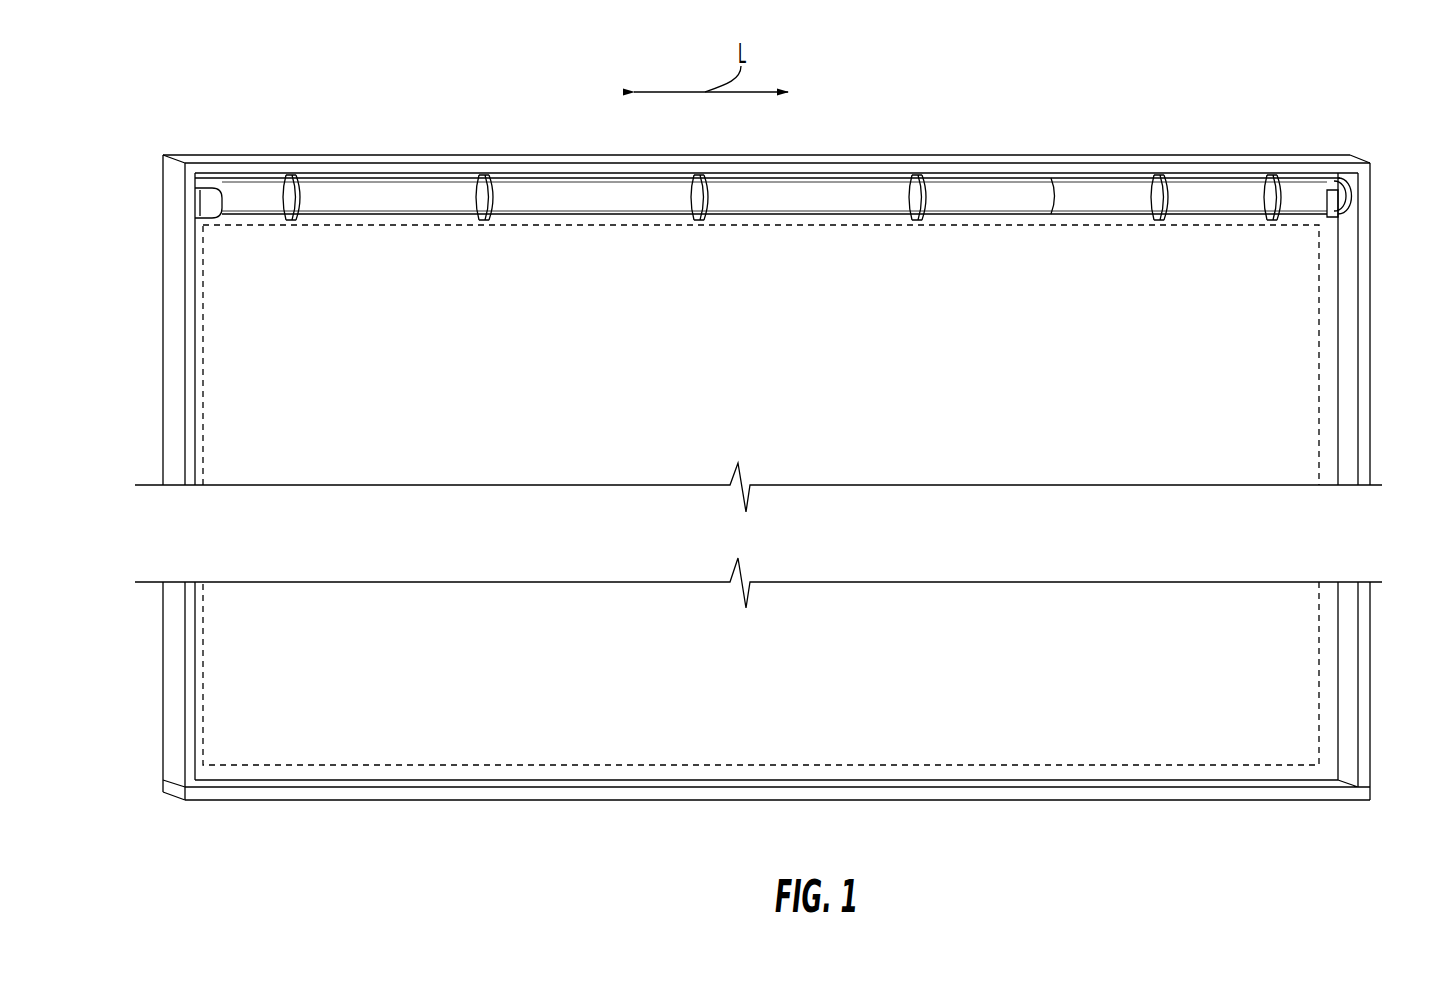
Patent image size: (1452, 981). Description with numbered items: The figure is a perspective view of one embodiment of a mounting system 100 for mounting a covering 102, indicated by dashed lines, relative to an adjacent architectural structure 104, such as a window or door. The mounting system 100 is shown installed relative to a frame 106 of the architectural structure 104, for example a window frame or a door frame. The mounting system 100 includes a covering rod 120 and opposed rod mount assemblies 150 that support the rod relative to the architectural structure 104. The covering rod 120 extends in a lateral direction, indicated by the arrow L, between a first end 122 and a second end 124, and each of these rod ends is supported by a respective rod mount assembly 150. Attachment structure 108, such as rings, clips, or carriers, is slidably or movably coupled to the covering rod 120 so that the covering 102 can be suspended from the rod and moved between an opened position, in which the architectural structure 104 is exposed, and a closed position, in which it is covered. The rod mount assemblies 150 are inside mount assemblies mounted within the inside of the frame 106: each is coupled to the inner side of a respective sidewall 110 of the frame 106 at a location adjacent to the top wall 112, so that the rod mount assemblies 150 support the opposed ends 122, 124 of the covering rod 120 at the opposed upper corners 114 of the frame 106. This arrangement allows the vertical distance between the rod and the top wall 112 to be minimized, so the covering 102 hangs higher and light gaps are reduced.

The mounting system 100 is at (770, 419).
The covering 102 is at (1262, 453).
The architectural structure 104 is at (770, 419).
The frame 106 is at (766, 138).
The attachment structure 108 is at (487, 222).
The sidewall 110 is at (172, 313).
The top wall 112 is at (533, 160).
The upper corners 114 is at (177, 143).
The covering rod 120 is at (778, 193).
The first end 122 is at (214, 188).
The second end 124 is at (1322, 183).
The rod mount assemblies 150 is at (215, 208).